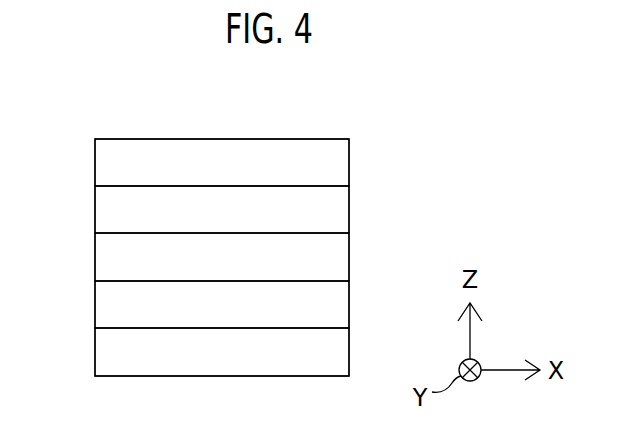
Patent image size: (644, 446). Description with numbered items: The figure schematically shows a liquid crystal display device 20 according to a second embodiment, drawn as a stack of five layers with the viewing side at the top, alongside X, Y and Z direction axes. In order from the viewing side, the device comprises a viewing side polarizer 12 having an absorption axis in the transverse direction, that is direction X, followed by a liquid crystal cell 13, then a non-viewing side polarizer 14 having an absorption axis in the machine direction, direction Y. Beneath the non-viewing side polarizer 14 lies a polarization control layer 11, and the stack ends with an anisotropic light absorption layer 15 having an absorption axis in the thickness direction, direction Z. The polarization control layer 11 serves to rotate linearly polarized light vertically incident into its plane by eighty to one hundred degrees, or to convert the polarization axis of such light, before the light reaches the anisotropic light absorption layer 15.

The liquid crystal display device 20 is at (289, 118).
The viewing side polarizer 12 is at (113, 165).
The liquid crystal cell 13 is at (113, 212).
The non-viewing side polarizer 14 is at (113, 259).
The polarization control layer 11 is at (113, 306).
The anisotropic light absorption layer 15 is at (113, 353).